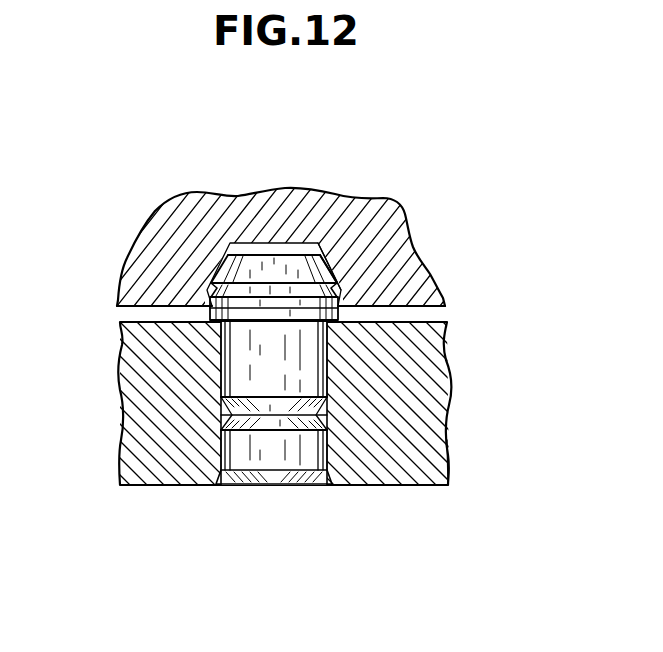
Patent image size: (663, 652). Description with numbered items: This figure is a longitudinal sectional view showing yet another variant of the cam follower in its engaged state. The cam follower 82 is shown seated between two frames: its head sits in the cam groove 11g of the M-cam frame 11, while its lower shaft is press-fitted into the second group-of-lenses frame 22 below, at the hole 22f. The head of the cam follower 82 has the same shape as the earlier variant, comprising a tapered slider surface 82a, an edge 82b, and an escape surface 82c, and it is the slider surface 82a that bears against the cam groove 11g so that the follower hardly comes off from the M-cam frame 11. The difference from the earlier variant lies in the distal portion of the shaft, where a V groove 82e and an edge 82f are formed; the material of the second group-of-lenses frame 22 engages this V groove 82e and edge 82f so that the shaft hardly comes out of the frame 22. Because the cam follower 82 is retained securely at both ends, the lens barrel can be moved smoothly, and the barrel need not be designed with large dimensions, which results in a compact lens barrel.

The M-cam frame 11 is at (412, 263).
The cam groove 11g is at (430, 288).
The second group-of-lenses frame 22 is at (427, 373).
The mounting hole of second member 22f is at (446, 457).
The cam follower 82 is at (257, 268).
The slider surface 82a is at (346, 276).
The edge 82b is at (332, 272).
The escape surface 82c is at (413, 282).
The V groove 82e is at (232, 417).
The edge 82f is at (333, 432).